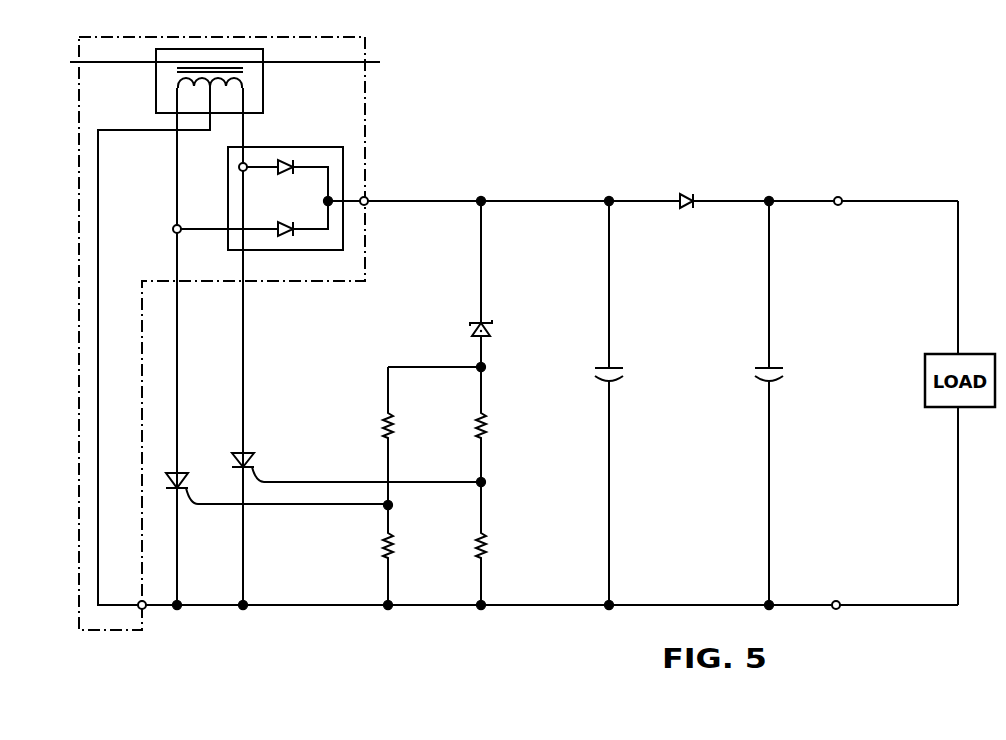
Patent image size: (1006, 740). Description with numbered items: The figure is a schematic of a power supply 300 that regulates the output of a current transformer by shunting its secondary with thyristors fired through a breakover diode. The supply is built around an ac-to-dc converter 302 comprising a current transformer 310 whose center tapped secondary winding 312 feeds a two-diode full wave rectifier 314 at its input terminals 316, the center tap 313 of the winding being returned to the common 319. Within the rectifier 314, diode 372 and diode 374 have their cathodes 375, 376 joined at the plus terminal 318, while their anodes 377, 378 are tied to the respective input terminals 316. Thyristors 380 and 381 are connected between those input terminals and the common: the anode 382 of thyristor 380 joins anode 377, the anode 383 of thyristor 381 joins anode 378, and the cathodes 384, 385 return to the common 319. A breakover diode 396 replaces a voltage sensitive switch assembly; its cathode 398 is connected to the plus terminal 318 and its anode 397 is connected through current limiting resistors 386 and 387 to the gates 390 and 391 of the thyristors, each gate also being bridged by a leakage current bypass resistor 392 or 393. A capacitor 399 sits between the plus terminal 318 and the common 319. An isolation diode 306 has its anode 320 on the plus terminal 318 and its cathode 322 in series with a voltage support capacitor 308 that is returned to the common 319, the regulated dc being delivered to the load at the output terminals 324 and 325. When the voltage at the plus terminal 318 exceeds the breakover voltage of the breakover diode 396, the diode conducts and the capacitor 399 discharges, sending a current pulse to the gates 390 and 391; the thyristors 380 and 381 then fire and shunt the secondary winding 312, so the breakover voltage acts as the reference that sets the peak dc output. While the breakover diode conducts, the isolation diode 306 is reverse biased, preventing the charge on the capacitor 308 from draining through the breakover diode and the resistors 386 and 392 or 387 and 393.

The power supply 300 is at (599, 644).
The ac-to-dc converter 302 is at (366, 127).
The isolation diode 306 is at (688, 192).
The voltage support capacitor 308 is at (776, 374).
The current transformer 310 is at (263, 96).
The secondary winding 312 is at (178, 83).
The center tap 313 is at (213, 125).
The rectifier 314 is at (318, 203).
The input terminals 316 is at (237, 168).
The plus terminal 318 is at (368, 197).
The common 319 is at (139, 608).
The anode 320 is at (654, 199).
The cathode 322 is at (722, 199).
The output terminal 324 is at (840, 197).
The output terminal 325 is at (838, 609).
The diode 372 is at (288, 160).
The diode 374 is at (286, 223).
The cathode 375 is at (322, 161).
The cathode 376 is at (322, 230).
The anode 377 is at (262, 166).
The anode 378 is at (205, 232).
The thyristor 380 is at (250, 456).
The thyristor 381 is at (186, 478).
The anode 382 is at (244, 368).
The anode 383 is at (178, 375).
The cathode 384 is at (244, 580).
The cathode 385 is at (178, 575).
The current limiting resistor 386 is at (487, 427).
The current limiting resistor 387 is at (395, 430).
The gate 390 is at (255, 470).
The gate 391 is at (188, 492).
The leakage current bypass resistor 392 is at (488, 553).
The leakage current bypass resistor 393 is at (394, 553).
The breakover diode 396 is at (494, 331).
The anode 397 is at (478, 350).
The cathode 398 is at (483, 280).
The capacitor 399 is at (623, 372).